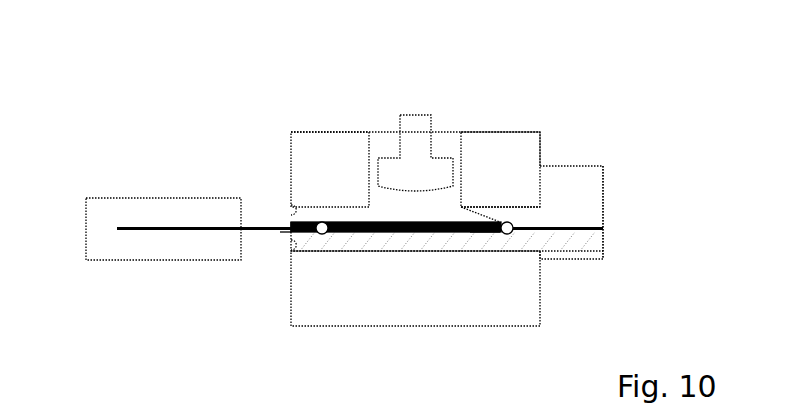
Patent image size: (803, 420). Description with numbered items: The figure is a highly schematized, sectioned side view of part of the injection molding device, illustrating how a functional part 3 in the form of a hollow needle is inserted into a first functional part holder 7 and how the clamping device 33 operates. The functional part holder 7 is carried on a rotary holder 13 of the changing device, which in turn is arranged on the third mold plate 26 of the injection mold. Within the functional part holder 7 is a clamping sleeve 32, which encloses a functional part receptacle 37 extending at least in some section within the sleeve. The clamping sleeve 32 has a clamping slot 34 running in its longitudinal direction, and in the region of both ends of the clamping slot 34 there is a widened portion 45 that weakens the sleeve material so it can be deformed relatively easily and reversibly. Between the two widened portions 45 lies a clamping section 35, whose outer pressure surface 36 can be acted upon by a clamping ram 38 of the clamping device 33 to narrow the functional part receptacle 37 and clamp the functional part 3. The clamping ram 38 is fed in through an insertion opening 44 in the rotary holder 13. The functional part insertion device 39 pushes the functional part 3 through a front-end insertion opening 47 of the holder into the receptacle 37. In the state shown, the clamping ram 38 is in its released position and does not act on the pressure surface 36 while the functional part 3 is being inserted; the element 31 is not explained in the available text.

The functional part 3 is at (257, 229).
The first functional part holder 7 is at (575, 190).
The rotary holder 13 is at (533, 148).
The third mold plate 26 is at (605, 92).
The insulating layer 31 is at (293, 250).
The clamping sleeve 32 is at (350, 240).
The clamping device 33 is at (449, 70).
The clamping slot 34 is at (477, 240).
The clamping section 35 is at (381, 222).
The outer pressure surface 36 is at (443, 220).
The functional part receptacle 37 is at (302, 222).
The clamping ram 38 is at (416, 172).
The functional part insertion device 39 is at (96, 211).
The insertion opening 44 is at (455, 142).
The widened portion 45 is at (322, 222).
The front-end insertion opening 47 is at (291, 229).